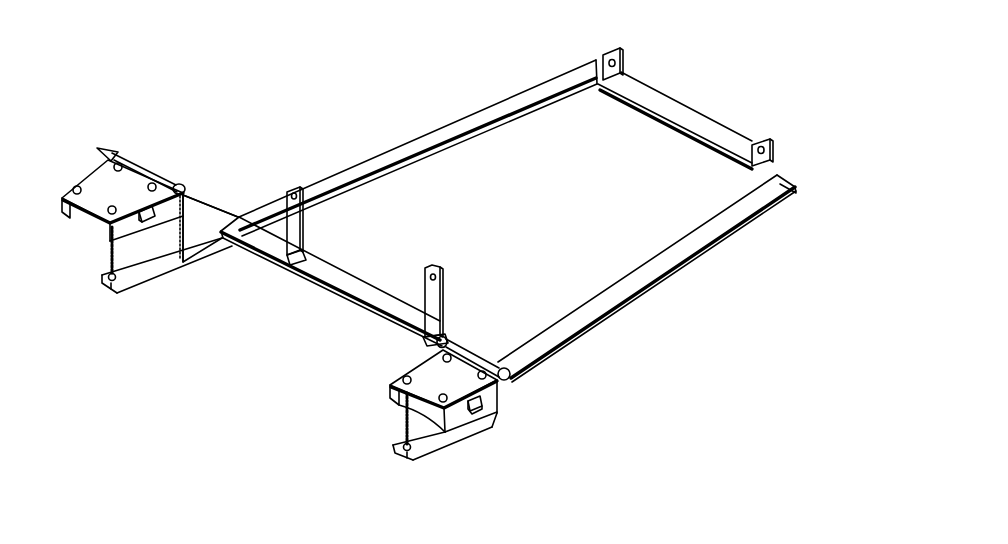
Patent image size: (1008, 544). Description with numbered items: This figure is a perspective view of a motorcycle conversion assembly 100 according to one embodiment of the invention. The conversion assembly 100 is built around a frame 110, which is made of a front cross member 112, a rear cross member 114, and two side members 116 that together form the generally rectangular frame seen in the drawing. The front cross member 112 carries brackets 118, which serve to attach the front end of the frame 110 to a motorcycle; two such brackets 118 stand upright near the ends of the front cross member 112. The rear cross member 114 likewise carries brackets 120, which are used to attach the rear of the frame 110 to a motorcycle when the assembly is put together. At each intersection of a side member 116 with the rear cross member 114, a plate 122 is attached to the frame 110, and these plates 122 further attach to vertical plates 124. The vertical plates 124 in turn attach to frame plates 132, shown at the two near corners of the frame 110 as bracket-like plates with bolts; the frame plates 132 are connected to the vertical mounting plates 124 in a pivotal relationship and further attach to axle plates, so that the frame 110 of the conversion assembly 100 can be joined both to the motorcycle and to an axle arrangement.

The motorcycle conversion assembly 100 is at (214, 93).
The frame 110 is at (679, 300).
The front cross member 112 is at (685, 108).
The rear cross member 114 is at (360, 288).
The side members 116 is at (395, 152).
The brackets 118 is at (625, 63).
The brackets 120 is at (298, 232).
The plates 122 is at (197, 228).
The vertical plates 124 is at (177, 241).
The frame plates 132 is at (98, 183).